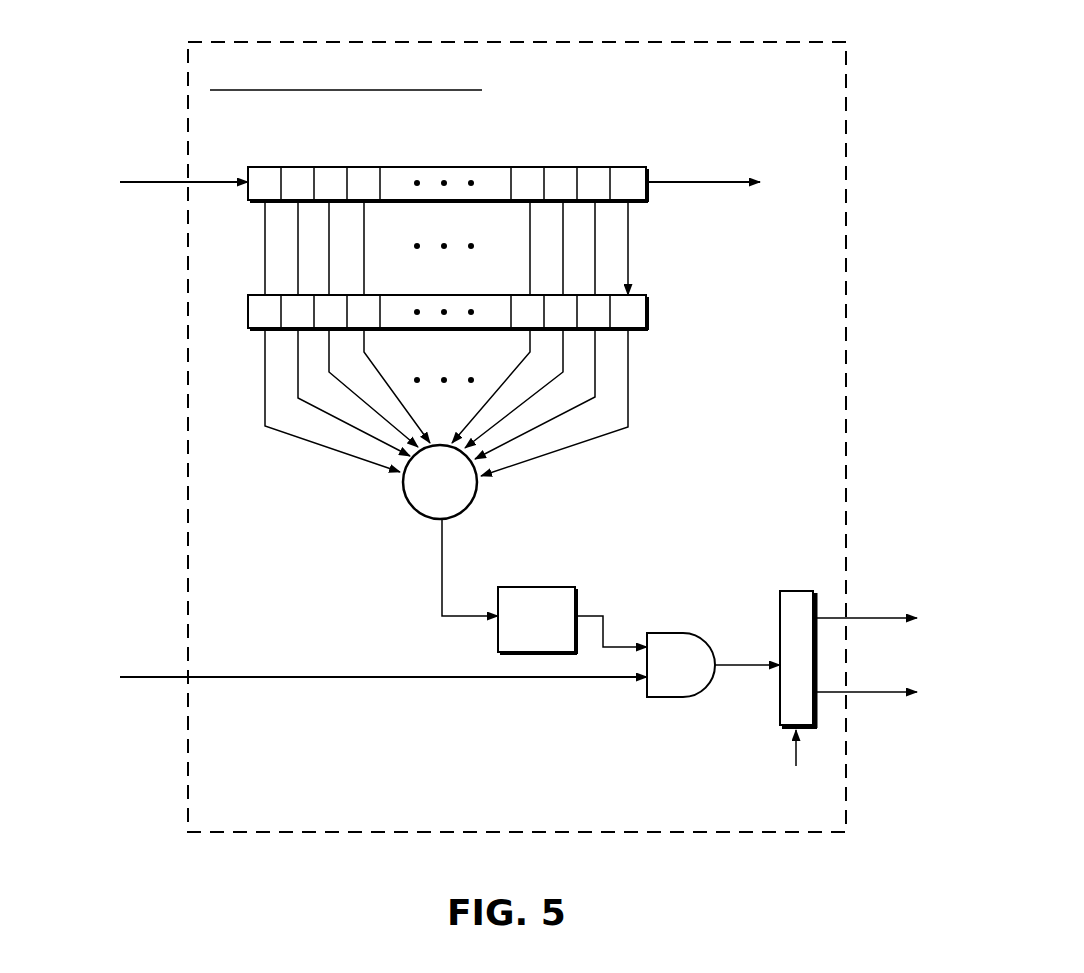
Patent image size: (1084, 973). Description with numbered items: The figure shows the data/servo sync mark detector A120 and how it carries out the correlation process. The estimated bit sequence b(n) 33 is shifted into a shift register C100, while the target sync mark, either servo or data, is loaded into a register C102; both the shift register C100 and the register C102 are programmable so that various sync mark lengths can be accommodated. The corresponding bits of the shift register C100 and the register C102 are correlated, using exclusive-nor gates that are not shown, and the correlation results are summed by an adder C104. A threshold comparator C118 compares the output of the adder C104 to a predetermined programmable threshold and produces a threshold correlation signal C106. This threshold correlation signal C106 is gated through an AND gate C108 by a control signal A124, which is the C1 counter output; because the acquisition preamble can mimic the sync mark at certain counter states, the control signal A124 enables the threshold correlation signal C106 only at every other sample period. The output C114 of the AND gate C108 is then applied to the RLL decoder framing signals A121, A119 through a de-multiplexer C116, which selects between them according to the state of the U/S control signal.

The data/servo sync mark detector A120 is at (720, 50).
The estimated bit sequence b(n) 33 is at (150, 180).
The shift register C100 is at (518, 166).
The register C102 is at (648, 305).
The adder C104 is at (473, 506).
The threshold comparator C118 is at (538, 587).
The threshold correlation signal C106 is at (606, 622).
The AND gate C108 is at (701, 698).
The output of the AND gate C114 is at (734, 658).
The de-multiplexer C116 is at (800, 590).
The RLL decoder framing signal A121 is at (872, 617).
The RLL decoder framing signal A119 is at (882, 694).
The control signal A124 is at (140, 676).